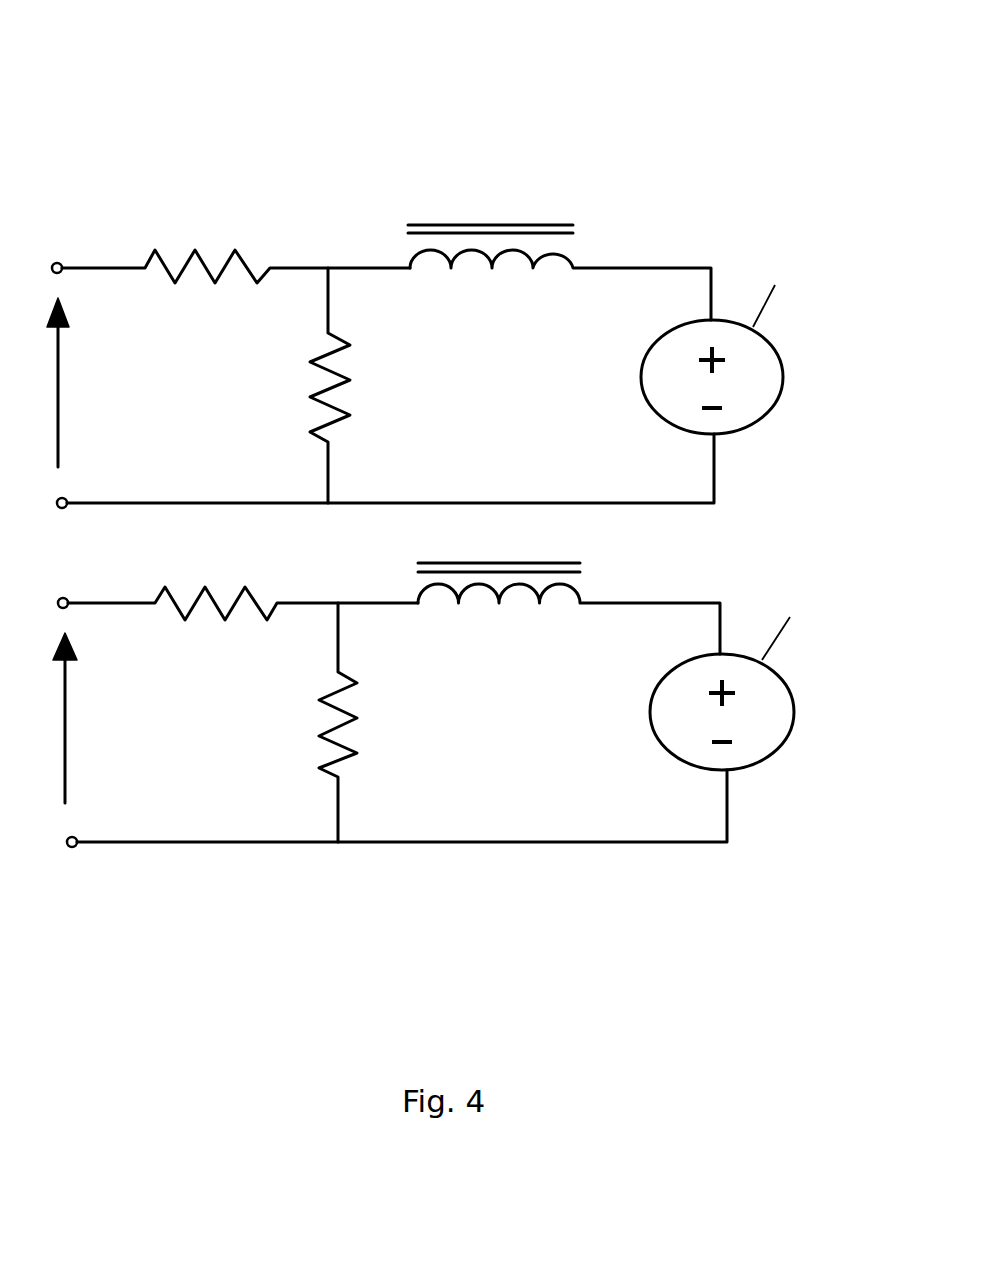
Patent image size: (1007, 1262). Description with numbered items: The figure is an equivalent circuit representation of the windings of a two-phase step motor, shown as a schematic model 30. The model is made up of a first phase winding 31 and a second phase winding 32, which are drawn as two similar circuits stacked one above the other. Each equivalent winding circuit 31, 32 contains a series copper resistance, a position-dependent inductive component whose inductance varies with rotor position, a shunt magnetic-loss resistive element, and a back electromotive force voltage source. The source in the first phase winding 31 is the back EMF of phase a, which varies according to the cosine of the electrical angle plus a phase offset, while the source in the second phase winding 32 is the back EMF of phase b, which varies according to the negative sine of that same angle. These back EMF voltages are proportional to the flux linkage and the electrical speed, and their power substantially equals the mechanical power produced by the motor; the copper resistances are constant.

The schematic model 30 is at (603, 102).
The first phase winding 31 is at (803, 350).
The second phase winding 32 is at (818, 710).